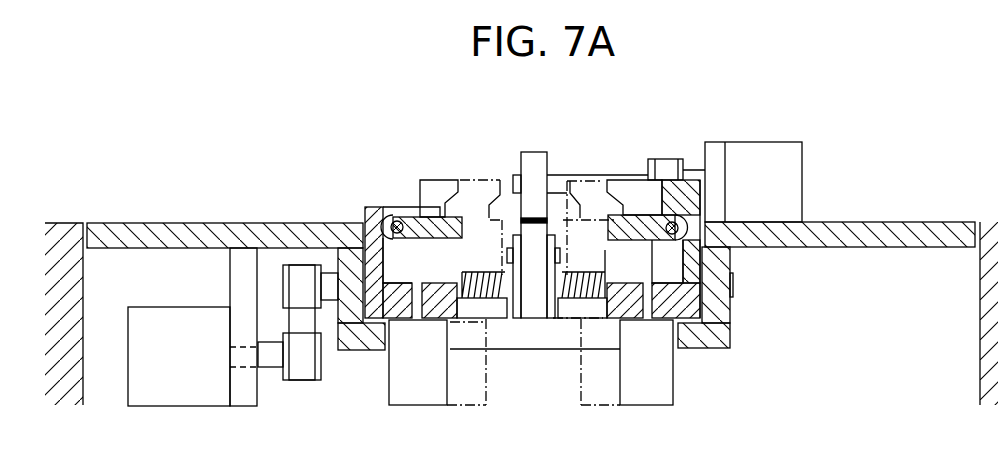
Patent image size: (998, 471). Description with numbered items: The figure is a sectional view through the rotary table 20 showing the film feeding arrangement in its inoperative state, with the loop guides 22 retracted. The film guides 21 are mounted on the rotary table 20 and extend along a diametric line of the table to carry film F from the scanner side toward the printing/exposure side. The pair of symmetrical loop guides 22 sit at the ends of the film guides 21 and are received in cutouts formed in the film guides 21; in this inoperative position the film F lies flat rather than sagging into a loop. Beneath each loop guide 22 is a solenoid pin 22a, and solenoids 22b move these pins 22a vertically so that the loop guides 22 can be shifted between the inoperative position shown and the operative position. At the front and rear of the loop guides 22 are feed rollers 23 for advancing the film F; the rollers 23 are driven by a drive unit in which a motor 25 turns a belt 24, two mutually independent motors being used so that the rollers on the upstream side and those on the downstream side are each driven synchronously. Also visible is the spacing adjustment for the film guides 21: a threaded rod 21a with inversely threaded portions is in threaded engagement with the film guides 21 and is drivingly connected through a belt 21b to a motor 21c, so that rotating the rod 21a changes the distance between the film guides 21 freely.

The rotary table 20 is at (863, 222).
The film guides 21 is at (432, 180).
The threaded rod 21a is at (578, 297).
The belt 21b is at (298, 372).
The motor 21c is at (177, 395).
The loop guides 22 is at (413, 208).
The solenoid pins 22a is at (414, 262).
The solenoids 22b is at (412, 393).
The feed rollers 23 is at (530, 157).
The belt 24 is at (665, 159).
The motor 25 is at (760, 157).
The film F is at (473, 207).